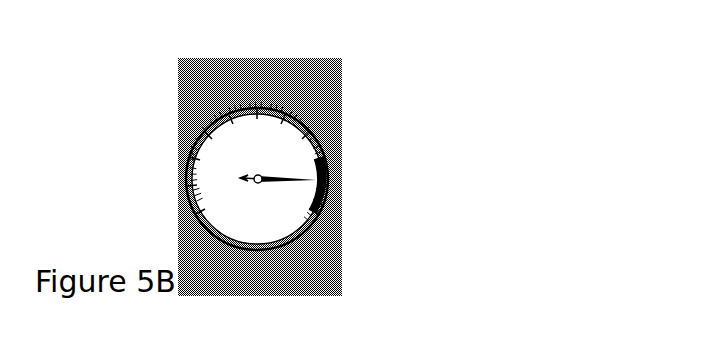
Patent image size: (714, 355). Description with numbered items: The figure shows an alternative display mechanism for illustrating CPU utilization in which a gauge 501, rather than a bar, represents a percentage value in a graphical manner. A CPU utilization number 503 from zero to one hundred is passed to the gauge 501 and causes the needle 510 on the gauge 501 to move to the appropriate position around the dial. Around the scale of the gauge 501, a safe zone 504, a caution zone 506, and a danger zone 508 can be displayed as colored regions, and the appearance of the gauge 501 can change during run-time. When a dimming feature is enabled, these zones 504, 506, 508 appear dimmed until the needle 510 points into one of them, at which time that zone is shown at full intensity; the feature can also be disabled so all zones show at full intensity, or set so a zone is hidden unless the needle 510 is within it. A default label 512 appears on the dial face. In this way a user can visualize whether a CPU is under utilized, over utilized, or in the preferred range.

The gauge 501 is at (333, 124).
The CPU utilization number 503 is at (323, 219).
The safe zone 504 is at (191, 165).
The caution zone 506 is at (280, 111).
The danger zone 508 is at (330, 168).
The needle 510 is at (256, 176).
The default value label 512 is at (235, 210).